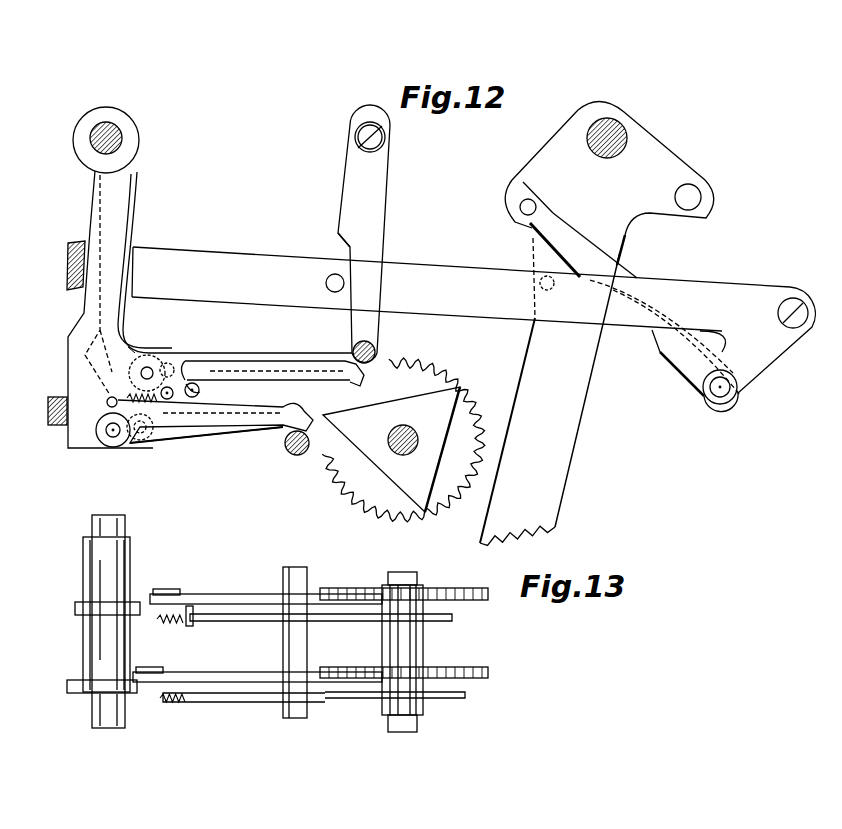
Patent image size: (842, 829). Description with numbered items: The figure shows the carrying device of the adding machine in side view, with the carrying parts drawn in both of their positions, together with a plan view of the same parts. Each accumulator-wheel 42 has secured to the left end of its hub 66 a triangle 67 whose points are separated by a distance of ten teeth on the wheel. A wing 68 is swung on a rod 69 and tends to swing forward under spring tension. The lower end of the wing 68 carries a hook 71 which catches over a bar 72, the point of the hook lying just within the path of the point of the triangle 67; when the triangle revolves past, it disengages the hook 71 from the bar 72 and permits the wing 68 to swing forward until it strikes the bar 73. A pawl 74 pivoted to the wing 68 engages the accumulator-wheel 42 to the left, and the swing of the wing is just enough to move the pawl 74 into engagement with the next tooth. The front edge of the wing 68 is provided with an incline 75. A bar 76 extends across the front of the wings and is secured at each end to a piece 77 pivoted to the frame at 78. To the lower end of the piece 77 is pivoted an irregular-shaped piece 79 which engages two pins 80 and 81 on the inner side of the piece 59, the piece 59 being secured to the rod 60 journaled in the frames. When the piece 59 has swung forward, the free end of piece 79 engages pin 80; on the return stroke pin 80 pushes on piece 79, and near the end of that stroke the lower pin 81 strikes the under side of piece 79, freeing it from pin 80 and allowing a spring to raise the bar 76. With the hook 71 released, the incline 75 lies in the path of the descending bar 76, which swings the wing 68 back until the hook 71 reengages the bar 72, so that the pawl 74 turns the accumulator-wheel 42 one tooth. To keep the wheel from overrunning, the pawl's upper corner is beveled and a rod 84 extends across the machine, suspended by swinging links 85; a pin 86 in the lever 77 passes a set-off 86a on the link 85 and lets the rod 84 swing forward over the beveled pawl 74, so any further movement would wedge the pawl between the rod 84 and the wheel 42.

In FIG. 12, the accumulator-wheel 42 is at (403, 440).
In FIG. 13, the accumulator-wheel 42 is at (456, 590).
In FIG. 12, the piece 59 is at (550, 391).
In FIG. 12, the rod 60 is at (626, 142).
In FIG. 13, the hub 66 is at (424, 648).
In FIG. 12, the triangle 67 is at (391, 449).
In FIG. 13, the triangle 67 is at (452, 617).
In FIG. 12, the wing 68 is at (94, 285).
In FIG. 13, the wing 68 is at (80, 707).
In FIG. 12, the rod 69 is at (118, 132).
In FIG. 12, the hook 71 is at (215, 421).
In FIG. 13, the hook 71 is at (235, 622).
In FIG. 12, the bar 72 is at (289, 450).
In FIG. 12, the bar 73 is at (57, 428).
In FIG. 12, the pawl 74 is at (273, 362).
In FIG. 13, the pawl 74 is at (238, 590).
In FIG. 12, the incline 75 is at (82, 330).
In FIG. 13, the incline 75 is at (66, 688).
In FIG. 12, the bar 76 is at (68, 269).
In FIG. 12, the piece 77 is at (461, 299).
In FIG. 12, the pivot 78 is at (778, 313).
In FIG. 12, the irregular-shaped piece 79 is at (635, 304).
In FIG. 12, the pin 80 is at (522, 214).
In FIG. 12, the pin 81 is at (546, 290).
In FIG. 12, the rod 84 is at (377, 347).
In FIG. 12, the swinging link 85 is at (392, 211).
In FIG. 12, the pin 86 is at (326, 284).
In FIG. 12, the set-off 86a is at (329, 243).